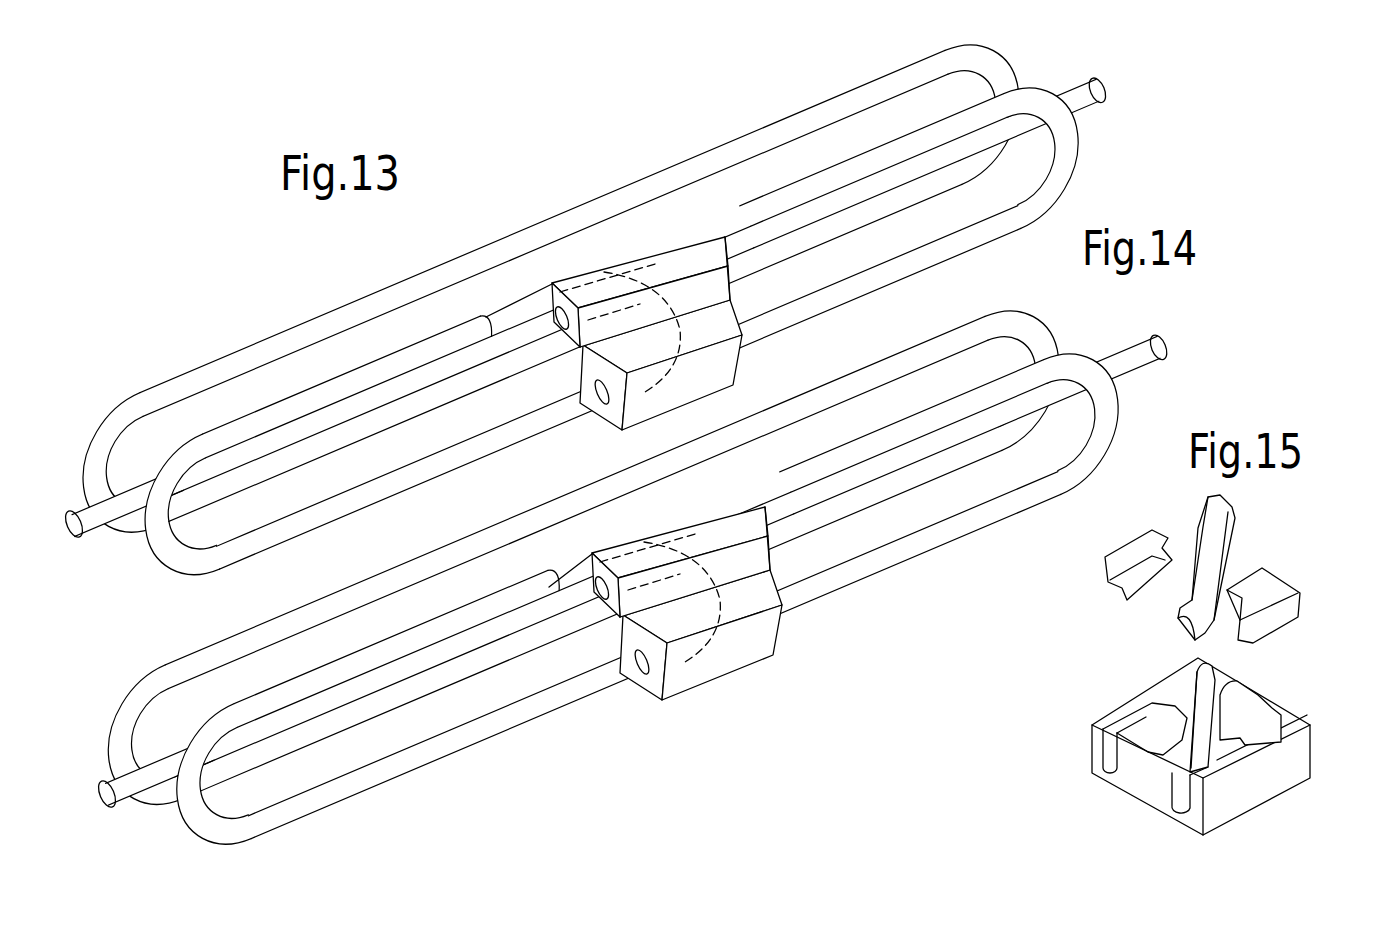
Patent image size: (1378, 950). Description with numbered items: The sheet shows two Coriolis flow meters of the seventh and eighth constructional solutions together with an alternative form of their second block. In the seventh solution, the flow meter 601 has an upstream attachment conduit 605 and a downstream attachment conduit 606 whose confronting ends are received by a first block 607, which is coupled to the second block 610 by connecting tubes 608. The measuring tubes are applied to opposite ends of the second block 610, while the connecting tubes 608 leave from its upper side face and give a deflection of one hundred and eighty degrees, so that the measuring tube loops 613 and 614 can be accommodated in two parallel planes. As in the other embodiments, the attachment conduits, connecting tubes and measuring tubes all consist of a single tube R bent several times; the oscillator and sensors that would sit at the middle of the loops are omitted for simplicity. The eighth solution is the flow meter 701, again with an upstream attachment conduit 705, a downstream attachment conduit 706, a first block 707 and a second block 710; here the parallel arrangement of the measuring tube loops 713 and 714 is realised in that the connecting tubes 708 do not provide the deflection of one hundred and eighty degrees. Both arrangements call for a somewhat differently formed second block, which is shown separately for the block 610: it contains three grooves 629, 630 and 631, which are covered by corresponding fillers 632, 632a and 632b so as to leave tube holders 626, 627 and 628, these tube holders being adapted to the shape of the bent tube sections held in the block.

In FIG. 13, the flow meter 601 is at (1124, 158).
In FIG. 13, the upstream attachment conduit 605 is at (91, 522).
In FIG. 13, the downstream attachment conduit 606 is at (1101, 99).
In FIG. 13, the first block 607 is at (637, 260).
In FIG. 13, the connecting tubes 608 is at (640, 330).
In FIG. 13, the second block 610 is at (613, 424).
In FIG. 15, the second block 610 is at (1126, 799).
In FIG. 13, the measuring tube loop 613 is at (420, 270).
In FIG. 13, the measuring tube loop 614 is at (307, 384).
In FIG. 13, the single tube R is at (1016, 63).
In FIG. 14, the single tube R is at (1040, 321).
In FIG. 14, the flow meter 701 is at (1160, 314).
In FIG. 14, the upstream attachment conduit 705 is at (123, 803).
In FIG. 14, the downstream attachment conduit 706 is at (1165, 360).
In FIG. 14, the first block 707 is at (720, 562).
In FIG. 14, the connecting tubes 708 is at (701, 646).
In FIG. 14, the second block 710 is at (688, 692).
In FIG. 14, the measuring tube loop 713 is at (454, 544).
In FIG. 14, the measuring tube loop 714 is at (329, 662).
In FIG. 15, the tube holder 626 is at (1117, 762).
In FIG. 15, the tube holder 627 is at (1200, 757).
In FIG. 15, the tube holder 628 is at (1258, 710).
In FIG. 15, the groove 629 is at (1130, 722).
In FIG. 15, the groove 630 is at (1205, 707).
In FIG. 15, the groove 631 is at (1264, 723).
In FIG. 15, the filler 632 is at (1222, 523).
In FIG. 15, the filler 632a is at (1133, 556).
In FIG. 15, the filler 632b is at (1268, 583).